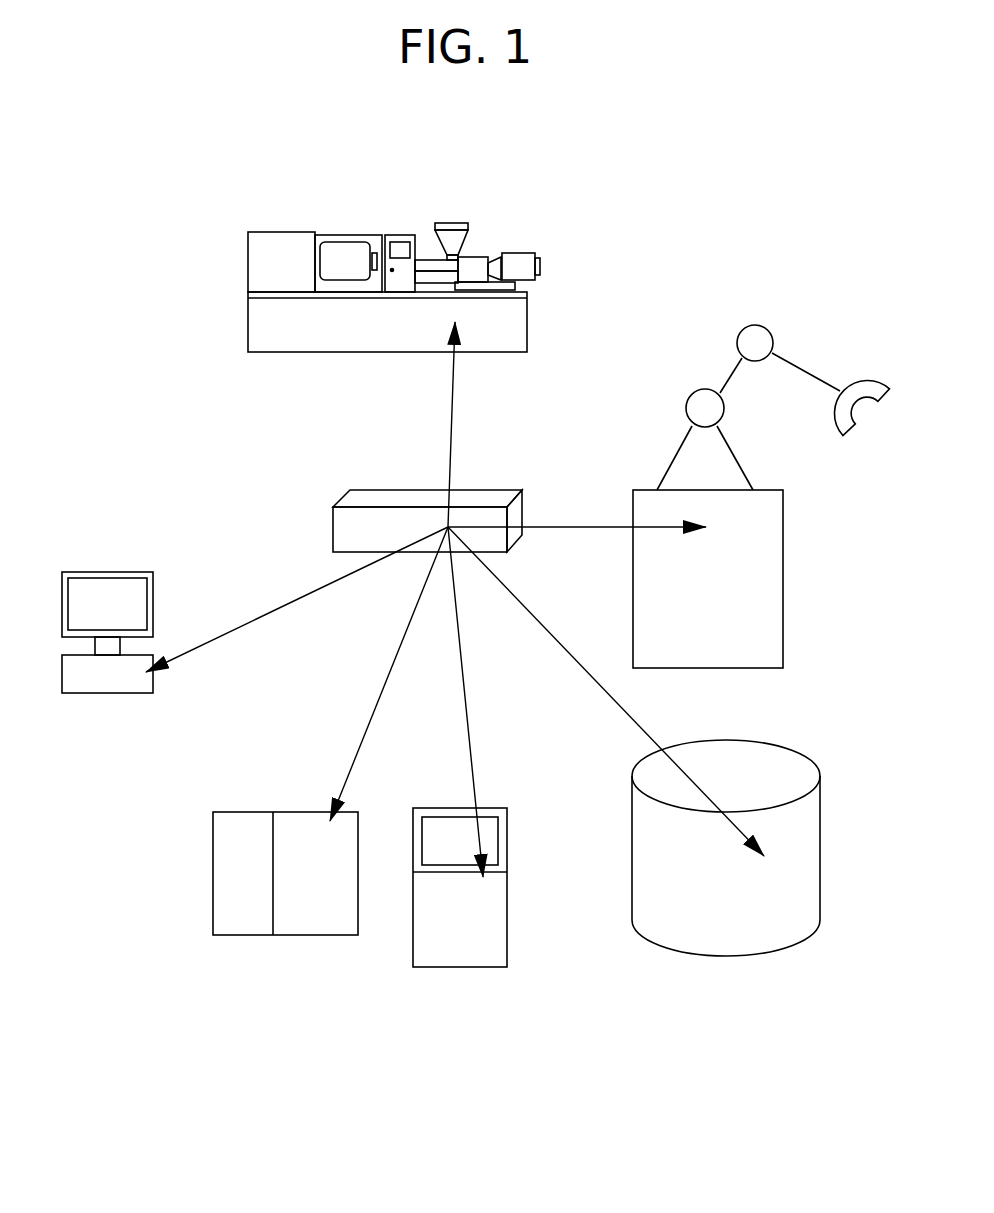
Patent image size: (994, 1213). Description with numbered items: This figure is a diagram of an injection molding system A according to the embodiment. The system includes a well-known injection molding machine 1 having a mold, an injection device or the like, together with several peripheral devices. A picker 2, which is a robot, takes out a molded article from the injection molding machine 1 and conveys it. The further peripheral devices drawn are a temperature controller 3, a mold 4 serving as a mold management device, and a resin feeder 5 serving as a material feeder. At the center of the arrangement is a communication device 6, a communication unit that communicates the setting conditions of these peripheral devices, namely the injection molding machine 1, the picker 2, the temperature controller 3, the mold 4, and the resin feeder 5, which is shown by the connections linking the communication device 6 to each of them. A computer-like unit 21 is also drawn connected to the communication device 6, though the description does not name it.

The injection molding system A is at (776, 169).
The injection molding machine 1 is at (418, 212).
The picker 2 is at (789, 593).
The temperature controller 3 is at (463, 973).
The mold 4 is at (253, 938).
The resin feeder 5 is at (723, 961).
The communication device 6 is at (488, 482).
The personal computer 21 is at (86, 702).